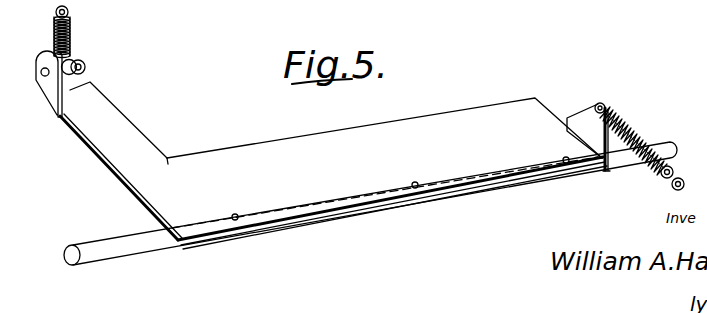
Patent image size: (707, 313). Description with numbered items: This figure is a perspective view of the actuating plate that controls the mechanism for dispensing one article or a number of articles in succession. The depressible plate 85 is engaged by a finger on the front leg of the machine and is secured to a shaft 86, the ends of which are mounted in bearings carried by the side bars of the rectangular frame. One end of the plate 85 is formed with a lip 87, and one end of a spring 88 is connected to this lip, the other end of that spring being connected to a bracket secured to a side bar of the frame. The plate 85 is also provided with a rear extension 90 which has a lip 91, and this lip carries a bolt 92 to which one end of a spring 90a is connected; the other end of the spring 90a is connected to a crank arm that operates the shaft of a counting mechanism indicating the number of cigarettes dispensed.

The depressible plate 85 is at (525, 120).
The shaft 86 is at (137, 245).
The lip 87 is at (585, 113).
The spring 88 is at (632, 130).
The rear extension 90 is at (113, 125).
The spring 90a is at (70, 27).
The lip 91 is at (52, 97).
The bolt 92 is at (77, 61).